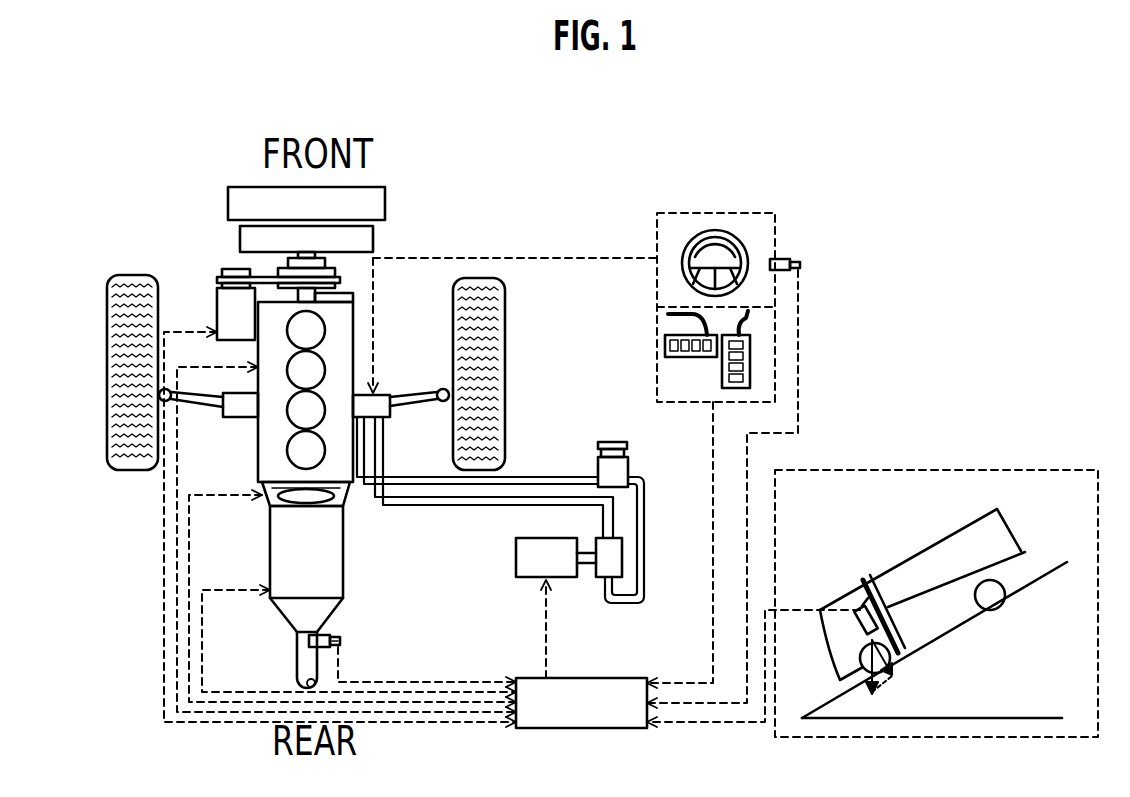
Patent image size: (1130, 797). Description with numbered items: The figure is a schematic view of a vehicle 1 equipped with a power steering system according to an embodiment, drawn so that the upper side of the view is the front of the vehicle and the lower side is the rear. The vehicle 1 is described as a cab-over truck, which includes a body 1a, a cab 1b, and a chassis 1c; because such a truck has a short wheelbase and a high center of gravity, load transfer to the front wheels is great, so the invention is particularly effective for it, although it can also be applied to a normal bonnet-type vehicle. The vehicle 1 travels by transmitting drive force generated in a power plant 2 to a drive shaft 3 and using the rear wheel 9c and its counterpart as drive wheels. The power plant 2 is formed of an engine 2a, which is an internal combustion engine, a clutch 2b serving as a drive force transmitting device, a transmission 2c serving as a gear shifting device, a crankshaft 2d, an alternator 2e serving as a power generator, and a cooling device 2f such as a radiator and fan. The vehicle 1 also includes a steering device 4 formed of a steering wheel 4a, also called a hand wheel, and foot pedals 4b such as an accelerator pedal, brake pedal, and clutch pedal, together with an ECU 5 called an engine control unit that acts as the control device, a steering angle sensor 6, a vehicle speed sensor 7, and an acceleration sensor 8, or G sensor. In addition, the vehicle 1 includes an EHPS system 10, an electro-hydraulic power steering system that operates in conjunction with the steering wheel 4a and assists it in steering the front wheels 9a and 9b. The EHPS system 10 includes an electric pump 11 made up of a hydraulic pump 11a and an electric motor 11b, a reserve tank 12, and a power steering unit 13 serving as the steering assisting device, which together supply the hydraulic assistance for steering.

The vehicle 1 is at (163, 244).
The body 1a is at (953, 547).
The cab 1b is at (853, 602).
The chassis 1c is at (1013, 550).
The power plant 2 is at (250, 450).
The engine 2a is at (340, 326).
The clutch 2b is at (270, 503).
The transmission 2c is at (281, 565).
The crankshaft 2d is at (336, 278).
The alternator 2e is at (223, 305).
The cooling device 2f is at (242, 238).
The drive shaft 3 is at (303, 652).
The steering device 4 is at (657, 247).
The steering wheel 4a is at (718, 238).
The foot pedals 4b is at (750, 355).
The ECU 5 is at (620, 687).
The steering angle sensor 6 is at (788, 258).
The vehicle speed sensor 7 is at (340, 641).
The acceleration sensor 8 is at (900, 638).
The front wheel 9a is at (115, 285).
The front wheel 9b is at (505, 318).
The rear wheel 9c is at (990, 594).
The EHPS system 10 is at (520, 480).
The electric pump 11 is at (527, 580).
The hydraulic pump 11a is at (615, 562).
The motor 11b is at (530, 558).
The reserve tank 12 is at (617, 465).
The power steering unit 13 is at (237, 412).